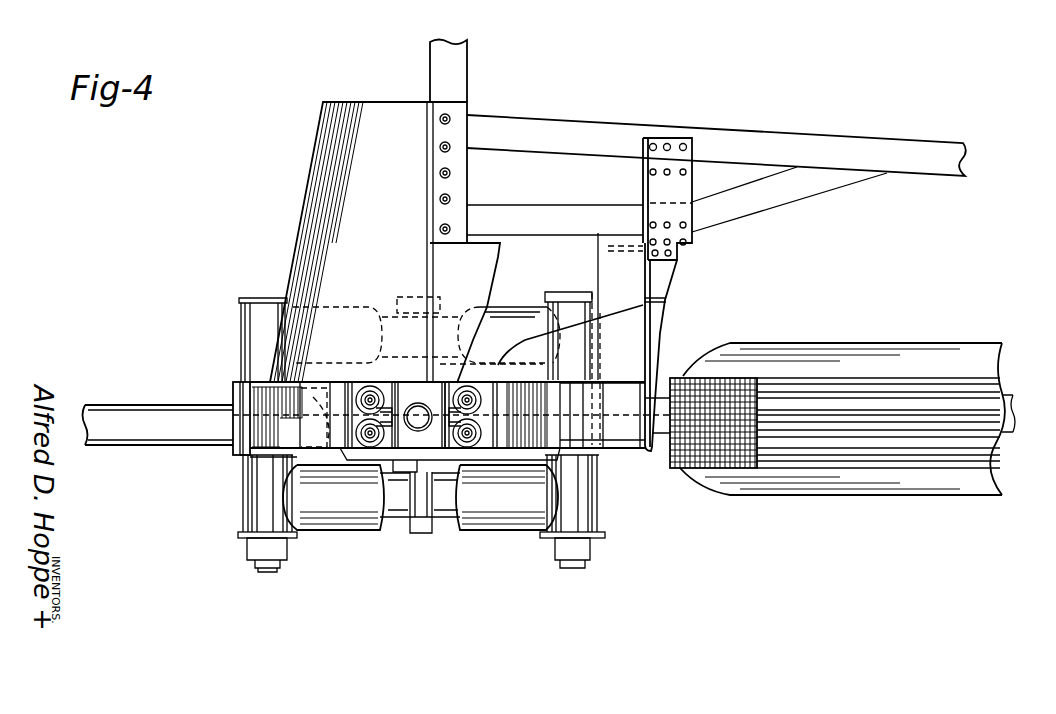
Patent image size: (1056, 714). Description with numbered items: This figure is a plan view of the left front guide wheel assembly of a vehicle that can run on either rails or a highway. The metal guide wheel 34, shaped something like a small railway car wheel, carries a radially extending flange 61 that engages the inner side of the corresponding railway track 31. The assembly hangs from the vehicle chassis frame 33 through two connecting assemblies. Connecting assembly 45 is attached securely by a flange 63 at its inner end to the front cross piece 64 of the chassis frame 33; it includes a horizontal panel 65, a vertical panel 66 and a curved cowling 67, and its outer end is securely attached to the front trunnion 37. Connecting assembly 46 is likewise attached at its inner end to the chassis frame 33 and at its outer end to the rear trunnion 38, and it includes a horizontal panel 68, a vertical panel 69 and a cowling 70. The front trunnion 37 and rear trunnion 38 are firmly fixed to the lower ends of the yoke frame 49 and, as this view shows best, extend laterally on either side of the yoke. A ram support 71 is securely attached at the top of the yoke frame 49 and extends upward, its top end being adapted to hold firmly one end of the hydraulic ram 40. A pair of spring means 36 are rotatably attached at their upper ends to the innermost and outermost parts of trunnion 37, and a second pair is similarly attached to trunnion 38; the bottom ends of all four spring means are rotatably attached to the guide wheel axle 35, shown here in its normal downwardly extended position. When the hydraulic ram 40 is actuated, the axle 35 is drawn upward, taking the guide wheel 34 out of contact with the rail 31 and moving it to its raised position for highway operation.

The railway track 31 is at (145, 390).
The vehicle chassis frame 33 is at (804, 119).
The guide wheel 34 is at (328, 420).
The guide wheel axle 35 is at (420, 533).
The spring means 36 is at (253, 328).
The front trunnion 37 is at (270, 570).
The rear trunnion 38 is at (575, 568).
The hydraulic ram 40 is at (420, 415).
The connecting assembly 45 is at (330, 222).
The connecting assembly 46 is at (660, 190).
The yoke frame 49 is at (262, 398).
The radially extending flange 61 is at (545, 364).
The flange 63 is at (455, 162).
The front cross piece 64 is at (440, 70).
The horizontal panel 65 is at (485, 262).
The vertical panel 66 is at (428, 150).
The curved cowling 67 is at (310, 280).
The horizontal panel 68 is at (692, 240).
The vertical panel 69 is at (673, 282).
The cowling 70 is at (637, 333).
The ram support 71 is at (390, 390).